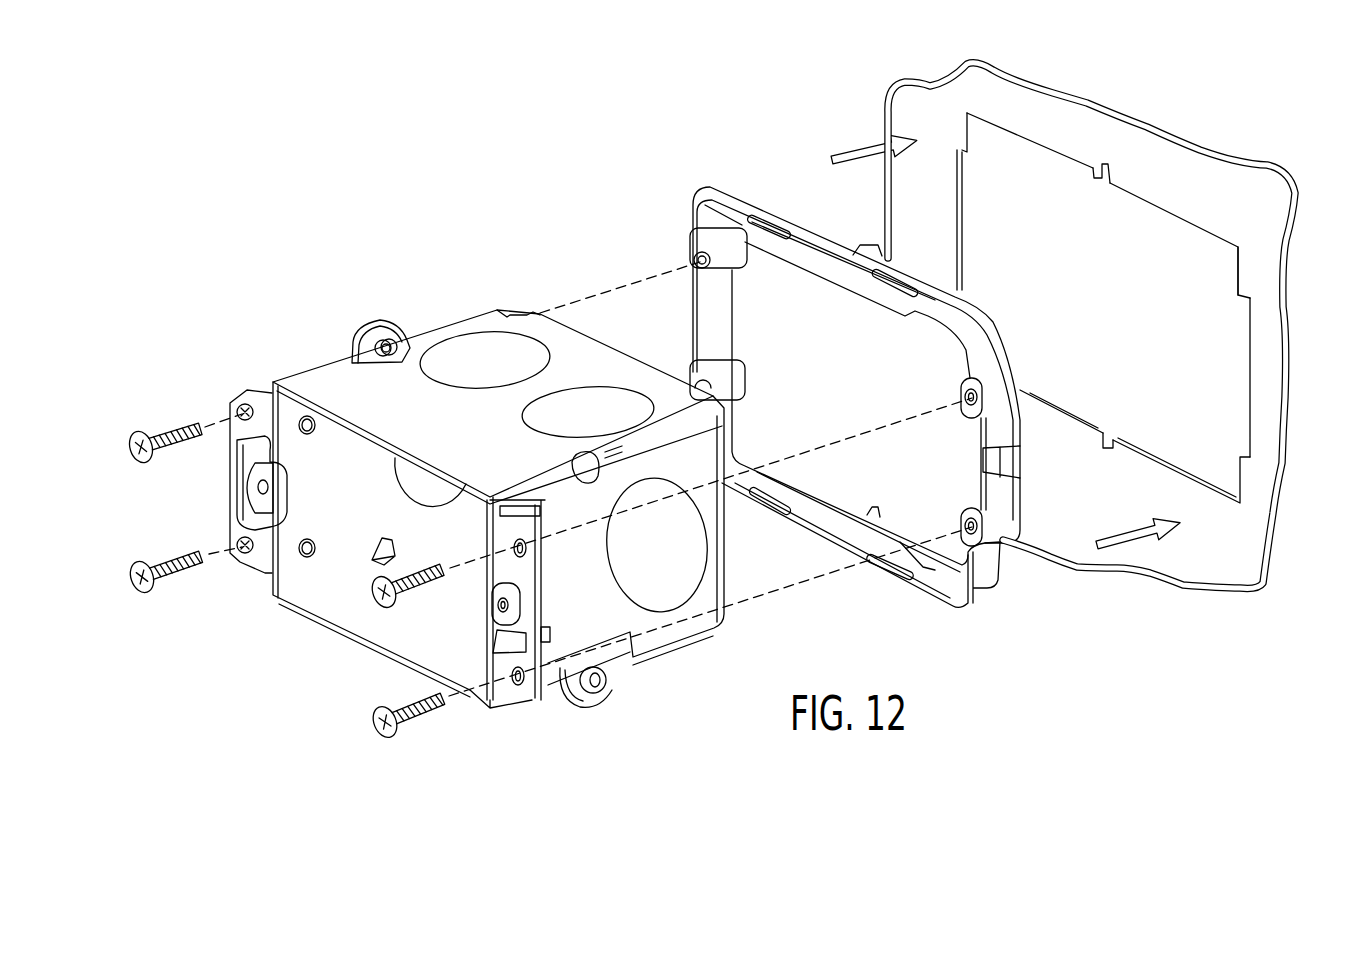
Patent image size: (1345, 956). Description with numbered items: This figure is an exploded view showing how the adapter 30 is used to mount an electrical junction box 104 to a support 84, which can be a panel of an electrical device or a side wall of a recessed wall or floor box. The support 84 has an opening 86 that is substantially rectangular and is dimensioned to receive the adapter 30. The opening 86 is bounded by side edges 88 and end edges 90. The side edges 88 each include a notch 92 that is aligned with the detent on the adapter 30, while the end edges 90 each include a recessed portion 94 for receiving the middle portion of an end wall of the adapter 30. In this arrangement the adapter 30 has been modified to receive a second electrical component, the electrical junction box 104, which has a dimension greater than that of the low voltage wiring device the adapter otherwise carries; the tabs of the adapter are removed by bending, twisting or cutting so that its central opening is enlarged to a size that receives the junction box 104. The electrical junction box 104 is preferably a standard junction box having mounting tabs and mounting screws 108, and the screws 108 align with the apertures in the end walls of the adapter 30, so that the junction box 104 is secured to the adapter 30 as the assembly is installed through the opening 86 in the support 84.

The adapter 30 is at (692, 206).
The support 84 is at (1180, 160).
The opening 86 is at (1185, 242).
The side edges 88 is at (1072, 167).
The end edges 90 is at (990, 147).
The notch 92 is at (1107, 183).
The recessed portion 94 is at (965, 253).
The electrical junction box 104 is at (318, 358).
The mounting screws 108 is at (185, 427).